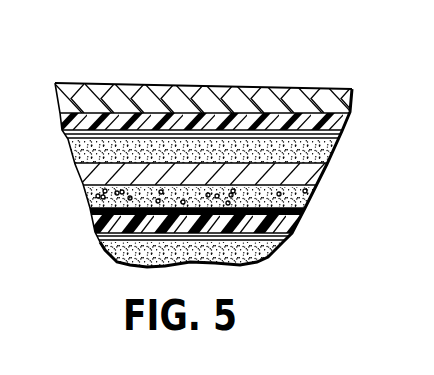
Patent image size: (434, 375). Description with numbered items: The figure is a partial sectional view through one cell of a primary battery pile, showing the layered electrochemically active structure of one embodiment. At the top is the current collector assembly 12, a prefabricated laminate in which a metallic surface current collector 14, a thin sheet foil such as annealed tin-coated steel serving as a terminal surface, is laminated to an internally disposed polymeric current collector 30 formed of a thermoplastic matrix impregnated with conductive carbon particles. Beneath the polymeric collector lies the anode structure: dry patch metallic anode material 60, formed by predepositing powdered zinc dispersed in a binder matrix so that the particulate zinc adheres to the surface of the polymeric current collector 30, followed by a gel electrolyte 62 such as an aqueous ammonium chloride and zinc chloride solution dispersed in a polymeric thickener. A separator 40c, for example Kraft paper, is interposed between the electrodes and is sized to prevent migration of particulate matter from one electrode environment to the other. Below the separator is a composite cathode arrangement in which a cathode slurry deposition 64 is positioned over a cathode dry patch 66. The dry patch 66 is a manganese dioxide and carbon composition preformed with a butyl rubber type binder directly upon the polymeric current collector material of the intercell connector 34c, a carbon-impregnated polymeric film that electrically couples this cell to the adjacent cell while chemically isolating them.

The metallic surface current collector 14 is at (282, 95).
The current collector assembly 12 is at (369, 88).
The polymeric current collector 30 is at (342, 128).
The dry patch anode material 60 is at (336, 143).
The gel electrolyte 62 is at (330, 157).
The separator 40c is at (322, 176).
The cathode slurry deposition 64 is at (309, 192).
The cathode dry patch 66 is at (303, 210).
The intercell connector 34c is at (290, 232).